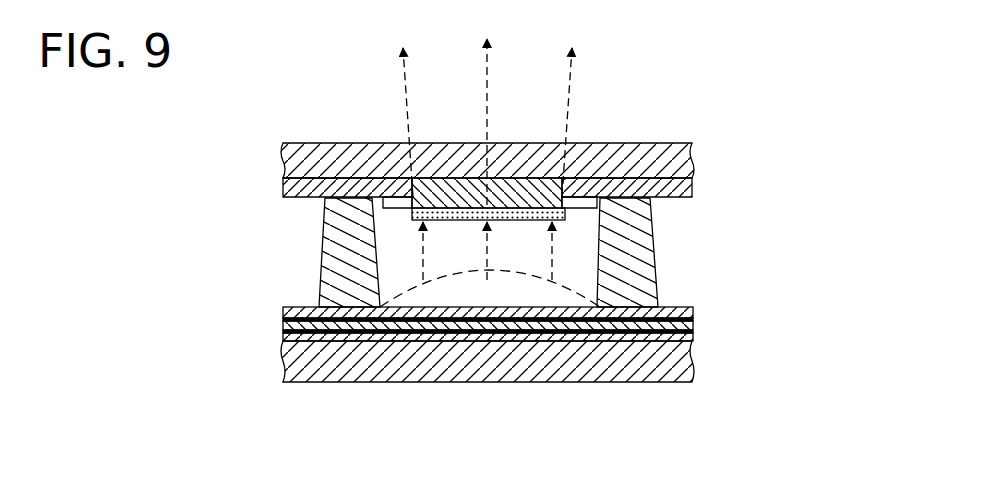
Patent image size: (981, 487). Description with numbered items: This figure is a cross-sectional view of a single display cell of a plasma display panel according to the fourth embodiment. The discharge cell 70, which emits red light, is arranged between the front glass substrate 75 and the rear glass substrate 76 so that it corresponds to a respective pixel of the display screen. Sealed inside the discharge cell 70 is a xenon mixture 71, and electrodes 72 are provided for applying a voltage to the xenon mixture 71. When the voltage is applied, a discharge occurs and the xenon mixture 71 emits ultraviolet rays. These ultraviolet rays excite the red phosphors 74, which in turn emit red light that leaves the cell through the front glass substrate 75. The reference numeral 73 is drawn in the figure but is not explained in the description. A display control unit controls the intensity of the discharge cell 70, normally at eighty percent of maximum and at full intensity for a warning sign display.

The discharge cell 70 is at (262, 205).
The xenon mixture 71 is at (519, 262).
The electrodes 72 is at (580, 203).
The light 73 is at (423, 262).
The red phosphors 74 is at (568, 215).
The front glass substrate 75 is at (692, 160).
The rear glass substrate 76 is at (690, 365).